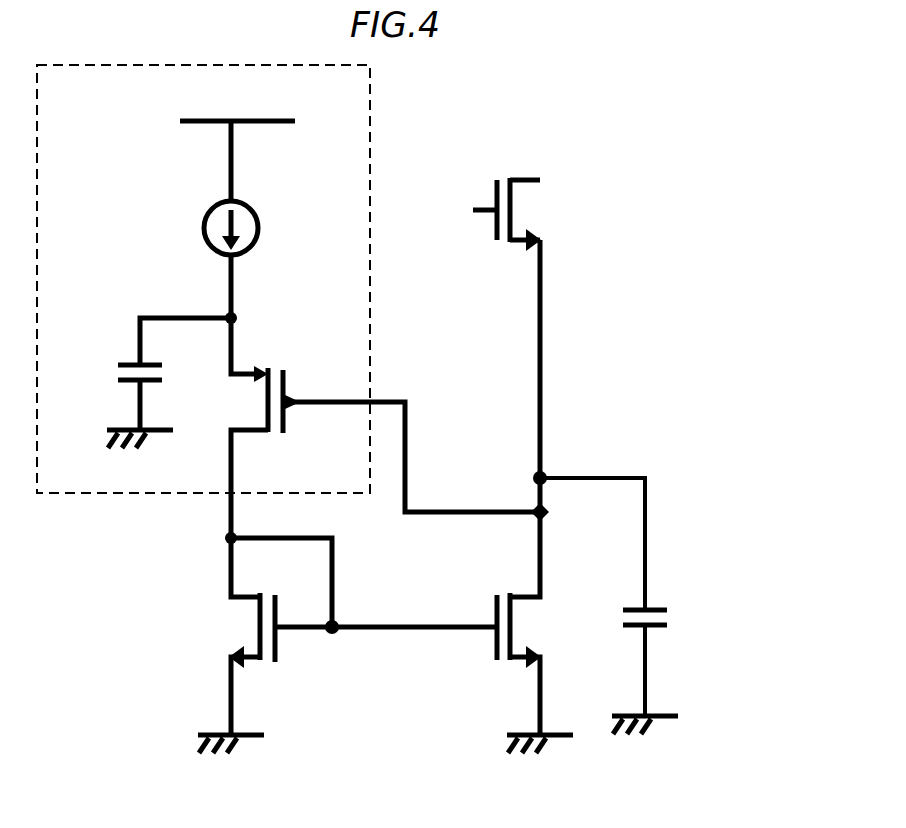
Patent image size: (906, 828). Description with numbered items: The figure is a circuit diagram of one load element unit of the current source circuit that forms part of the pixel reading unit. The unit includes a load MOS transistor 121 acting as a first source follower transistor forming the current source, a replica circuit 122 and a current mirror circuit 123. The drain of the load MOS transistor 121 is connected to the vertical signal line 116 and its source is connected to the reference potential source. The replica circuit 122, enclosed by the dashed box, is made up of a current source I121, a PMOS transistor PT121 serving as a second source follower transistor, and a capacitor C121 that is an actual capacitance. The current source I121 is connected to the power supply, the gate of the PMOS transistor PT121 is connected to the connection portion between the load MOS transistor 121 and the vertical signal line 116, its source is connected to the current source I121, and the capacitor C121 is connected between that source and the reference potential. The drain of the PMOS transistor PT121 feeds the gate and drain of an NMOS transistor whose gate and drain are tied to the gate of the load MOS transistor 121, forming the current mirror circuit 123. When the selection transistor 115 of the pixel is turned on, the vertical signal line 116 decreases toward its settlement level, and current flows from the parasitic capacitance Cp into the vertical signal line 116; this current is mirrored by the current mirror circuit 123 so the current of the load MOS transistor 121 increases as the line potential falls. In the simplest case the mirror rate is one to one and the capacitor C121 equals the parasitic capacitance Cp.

The selection transistor 115 is at (530, 212).
The vertical signal line 116 is at (543, 403).
The load MOS transistor 121 is at (522, 628).
The replica circuit 122 is at (90, 495).
The current mirror circuit 123 is at (323, 700).
The current source I121 is at (259, 229).
The capacitor C121 is at (116, 370).
The PMOS transistor PT121 is at (272, 366).
The parasitic capacitance Cp is at (668, 620).